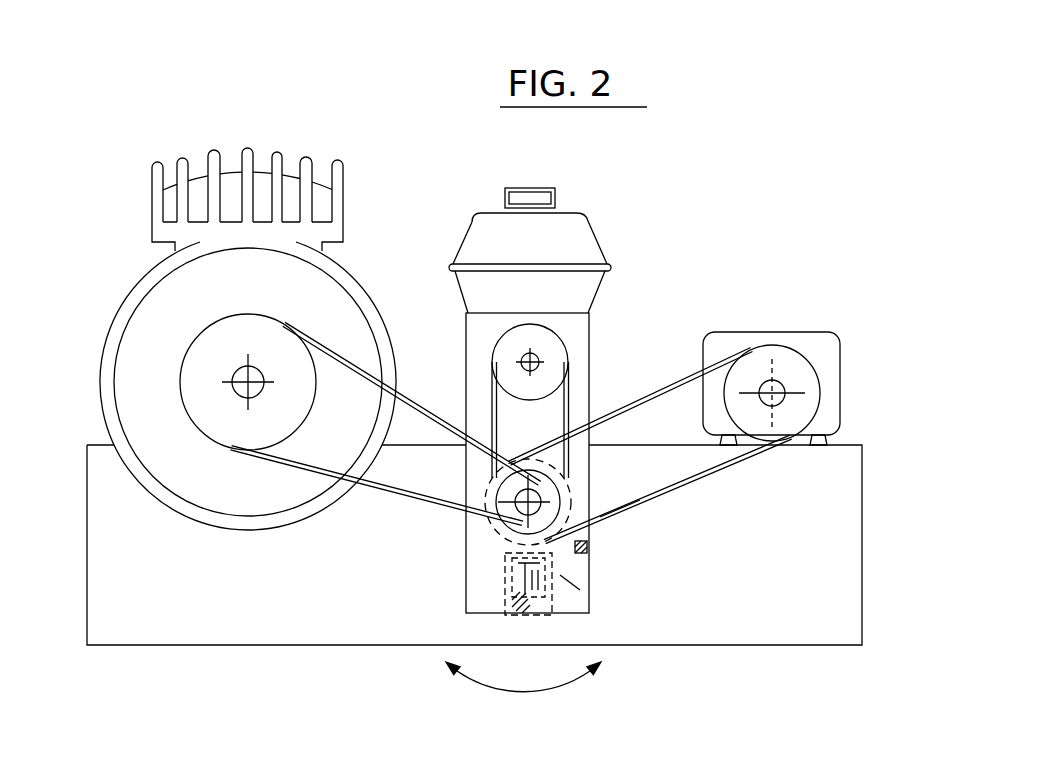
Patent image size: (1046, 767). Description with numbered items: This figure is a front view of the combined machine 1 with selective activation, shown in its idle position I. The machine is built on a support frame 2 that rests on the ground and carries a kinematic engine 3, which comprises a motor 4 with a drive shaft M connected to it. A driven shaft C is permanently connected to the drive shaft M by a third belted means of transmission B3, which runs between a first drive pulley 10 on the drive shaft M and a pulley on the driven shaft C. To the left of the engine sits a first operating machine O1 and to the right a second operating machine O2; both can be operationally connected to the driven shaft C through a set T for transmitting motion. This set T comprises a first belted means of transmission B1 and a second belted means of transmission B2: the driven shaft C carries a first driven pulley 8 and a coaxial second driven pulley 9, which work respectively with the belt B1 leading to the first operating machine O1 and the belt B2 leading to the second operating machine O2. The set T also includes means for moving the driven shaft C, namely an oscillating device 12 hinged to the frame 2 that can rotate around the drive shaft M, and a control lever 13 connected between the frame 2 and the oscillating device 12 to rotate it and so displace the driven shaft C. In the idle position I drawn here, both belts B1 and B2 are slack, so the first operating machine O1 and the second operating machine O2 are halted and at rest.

The combined machine 1 is at (710, 220).
The support frame 2 is at (843, 523).
The kinematic engine 3 is at (477, 365).
The motor 4 is at (577, 245).
The first driven pulley 8 is at (463, 513).
The second driven pulley 9 is at (607, 518).
The first drive pulley 10 is at (557, 358).
The oscillating device 12 is at (573, 583).
The control lever 13 is at (520, 598).
The drive shaft M is at (537, 357).
The driven shaft C is at (490, 530).
The selective motion transmission set T is at (580, 547).
The idle position I is at (523, 703).
The first operating machine O1 is at (158, 300).
The second operating machine O2 is at (817, 345).
The first belted means of transmission B1 is at (312, 472).
The second belted means of transmission B2 is at (720, 470).
The third belted means of transmission B3 is at (570, 398).